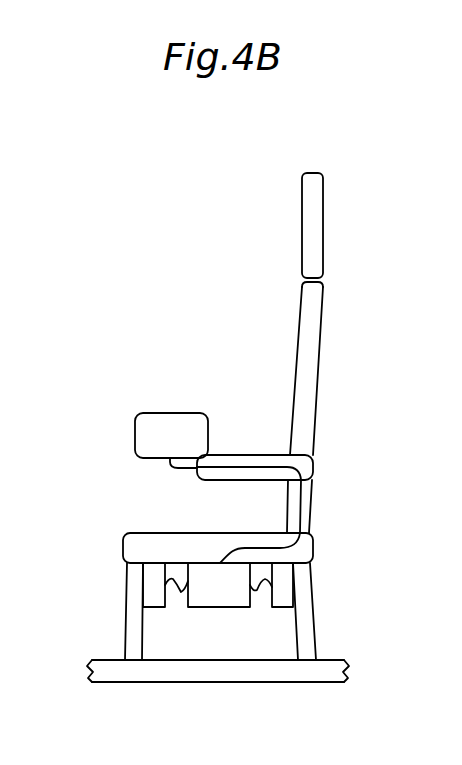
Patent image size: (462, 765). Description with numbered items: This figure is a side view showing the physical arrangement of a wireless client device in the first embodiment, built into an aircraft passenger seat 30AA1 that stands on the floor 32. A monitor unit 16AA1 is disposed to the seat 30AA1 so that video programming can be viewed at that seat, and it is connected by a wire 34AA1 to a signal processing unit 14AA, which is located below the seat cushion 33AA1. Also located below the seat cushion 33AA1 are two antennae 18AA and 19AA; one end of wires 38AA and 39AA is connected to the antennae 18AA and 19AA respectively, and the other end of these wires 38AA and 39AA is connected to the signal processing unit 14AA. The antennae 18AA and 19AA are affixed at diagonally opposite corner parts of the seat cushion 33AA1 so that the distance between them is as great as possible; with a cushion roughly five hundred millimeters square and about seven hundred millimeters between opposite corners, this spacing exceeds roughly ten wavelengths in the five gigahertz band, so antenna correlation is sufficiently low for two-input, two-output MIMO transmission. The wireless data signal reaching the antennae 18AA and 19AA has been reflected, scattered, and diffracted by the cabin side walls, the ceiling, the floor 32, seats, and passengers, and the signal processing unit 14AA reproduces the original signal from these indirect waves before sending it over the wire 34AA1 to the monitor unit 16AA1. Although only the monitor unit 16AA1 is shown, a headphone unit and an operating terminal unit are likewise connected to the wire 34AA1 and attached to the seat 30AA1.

The seat 30AA1 is at (310, 172).
The monitor unit 16AA1 is at (172, 413).
The wire 34AA1 is at (290, 503).
The seat cushion 33AA1 is at (155, 532).
The antenna 18AA is at (157, 608).
The wire 38AA is at (178, 594).
The signal processing unit 14AA is at (218, 608).
The wire 39AA is at (262, 592).
The antenna 19AA is at (283, 608).
The floor 32 is at (102, 683).